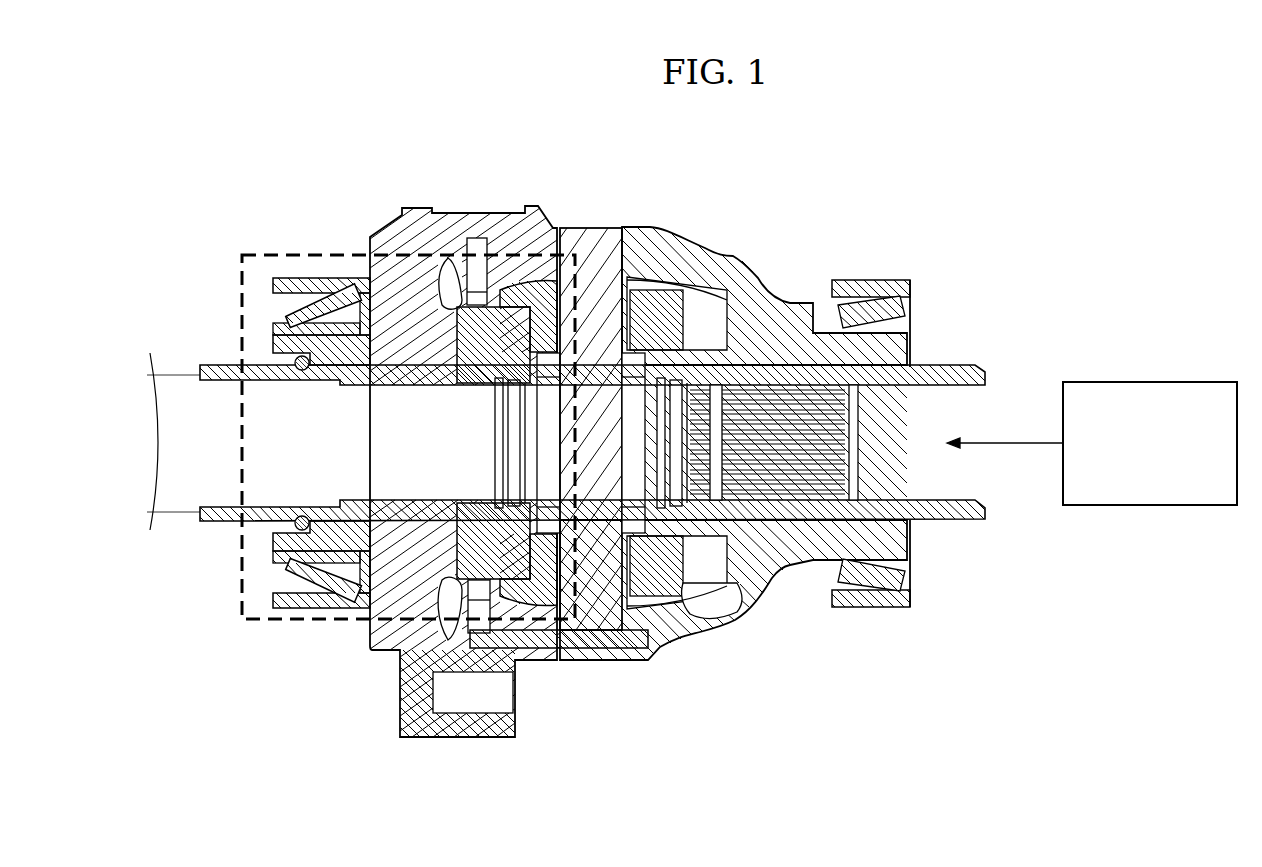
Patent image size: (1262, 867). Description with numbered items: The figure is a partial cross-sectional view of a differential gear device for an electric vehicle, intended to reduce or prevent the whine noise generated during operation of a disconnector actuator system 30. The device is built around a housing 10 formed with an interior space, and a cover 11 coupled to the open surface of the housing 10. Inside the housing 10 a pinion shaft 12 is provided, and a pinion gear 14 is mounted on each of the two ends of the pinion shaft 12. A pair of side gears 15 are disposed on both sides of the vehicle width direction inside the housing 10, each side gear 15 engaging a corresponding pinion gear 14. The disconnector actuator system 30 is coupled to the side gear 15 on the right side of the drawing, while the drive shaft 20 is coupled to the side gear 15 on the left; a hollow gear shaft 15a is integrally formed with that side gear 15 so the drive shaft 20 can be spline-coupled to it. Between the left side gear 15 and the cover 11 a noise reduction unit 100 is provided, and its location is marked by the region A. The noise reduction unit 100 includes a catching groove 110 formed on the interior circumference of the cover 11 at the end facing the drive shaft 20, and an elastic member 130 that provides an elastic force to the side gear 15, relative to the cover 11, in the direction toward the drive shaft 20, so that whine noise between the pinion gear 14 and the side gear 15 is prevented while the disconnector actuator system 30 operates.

The housing 10 is at (653, 258).
The cover 11 is at (382, 243).
The pinion shaft 12 is at (595, 240).
The pinion gear 14 is at (537, 297).
The side gear 15 is at (487, 327).
The hollow gear shaft 15a is at (222, 367).
The drive shaft 20 is at (172, 447).
The disconnector actuator system 30 is at (1152, 382).
The noise reduction unit 100 is at (270, 535).
The catching groove 110 is at (287, 520).
The elastic member 130 is at (313, 593).
The enlarged region A is at (275, 255).